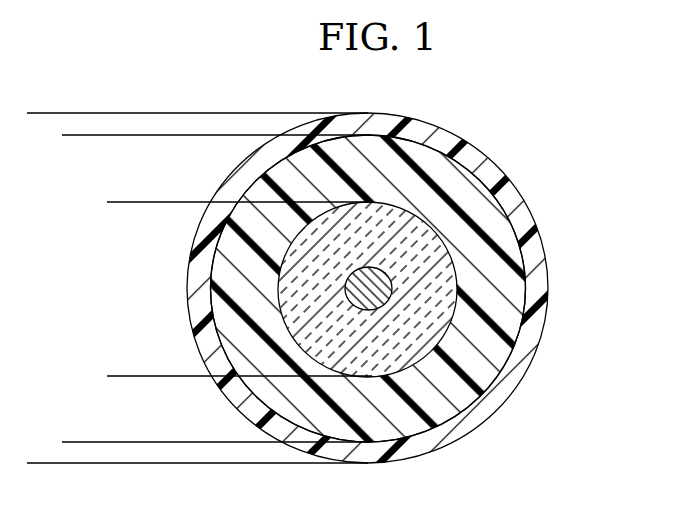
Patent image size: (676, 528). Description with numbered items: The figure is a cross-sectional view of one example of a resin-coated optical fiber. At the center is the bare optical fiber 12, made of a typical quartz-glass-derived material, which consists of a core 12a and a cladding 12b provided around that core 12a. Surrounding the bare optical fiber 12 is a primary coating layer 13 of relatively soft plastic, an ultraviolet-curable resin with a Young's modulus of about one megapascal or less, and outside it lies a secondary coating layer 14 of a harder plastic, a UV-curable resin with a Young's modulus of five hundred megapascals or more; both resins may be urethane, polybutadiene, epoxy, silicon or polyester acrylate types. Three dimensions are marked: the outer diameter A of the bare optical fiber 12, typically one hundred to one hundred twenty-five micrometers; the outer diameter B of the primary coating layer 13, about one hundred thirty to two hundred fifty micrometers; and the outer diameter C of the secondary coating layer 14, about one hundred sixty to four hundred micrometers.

The bare optical fiber 12 is at (470, 293).
The core 12a is at (388, 277).
The cladding 12b is at (430, 316).
The primary coating layer 13 is at (466, 203).
The secondary coating layer 14 is at (452, 433).
The outer diameter of bare optical fiber A is at (142, 216).
The outer diameter of primary coating layer B is at (96, 149).
The outer diameter of secondary coating layer C is at (50, 127).